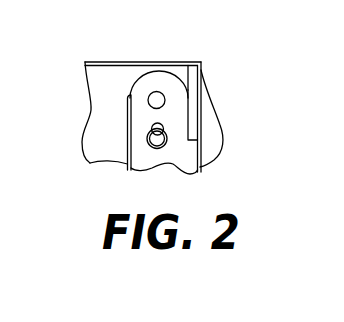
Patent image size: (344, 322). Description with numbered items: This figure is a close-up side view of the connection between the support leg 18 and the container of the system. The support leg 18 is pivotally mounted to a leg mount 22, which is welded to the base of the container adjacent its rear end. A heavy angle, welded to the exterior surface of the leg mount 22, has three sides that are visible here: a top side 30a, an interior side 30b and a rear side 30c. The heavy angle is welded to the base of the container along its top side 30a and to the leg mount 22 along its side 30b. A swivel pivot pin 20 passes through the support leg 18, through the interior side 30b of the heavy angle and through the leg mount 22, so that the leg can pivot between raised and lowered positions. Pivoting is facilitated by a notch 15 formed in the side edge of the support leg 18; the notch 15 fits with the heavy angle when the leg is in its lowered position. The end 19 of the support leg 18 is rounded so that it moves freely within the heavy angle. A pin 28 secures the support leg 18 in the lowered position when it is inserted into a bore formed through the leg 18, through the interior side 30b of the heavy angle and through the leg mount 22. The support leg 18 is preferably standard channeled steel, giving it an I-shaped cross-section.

The notch 15 is at (188, 133).
The support leg 18 is at (183, 150).
The end 19 is at (147, 80).
The swivel pivot pin 20 is at (146, 96).
The leg mount 22 is at (204, 105).
The pin 28 is at (143, 133).
The top side 30a is at (155, 62).
The interior side 30b is at (184, 70).
The rear side 30c is at (202, 67).